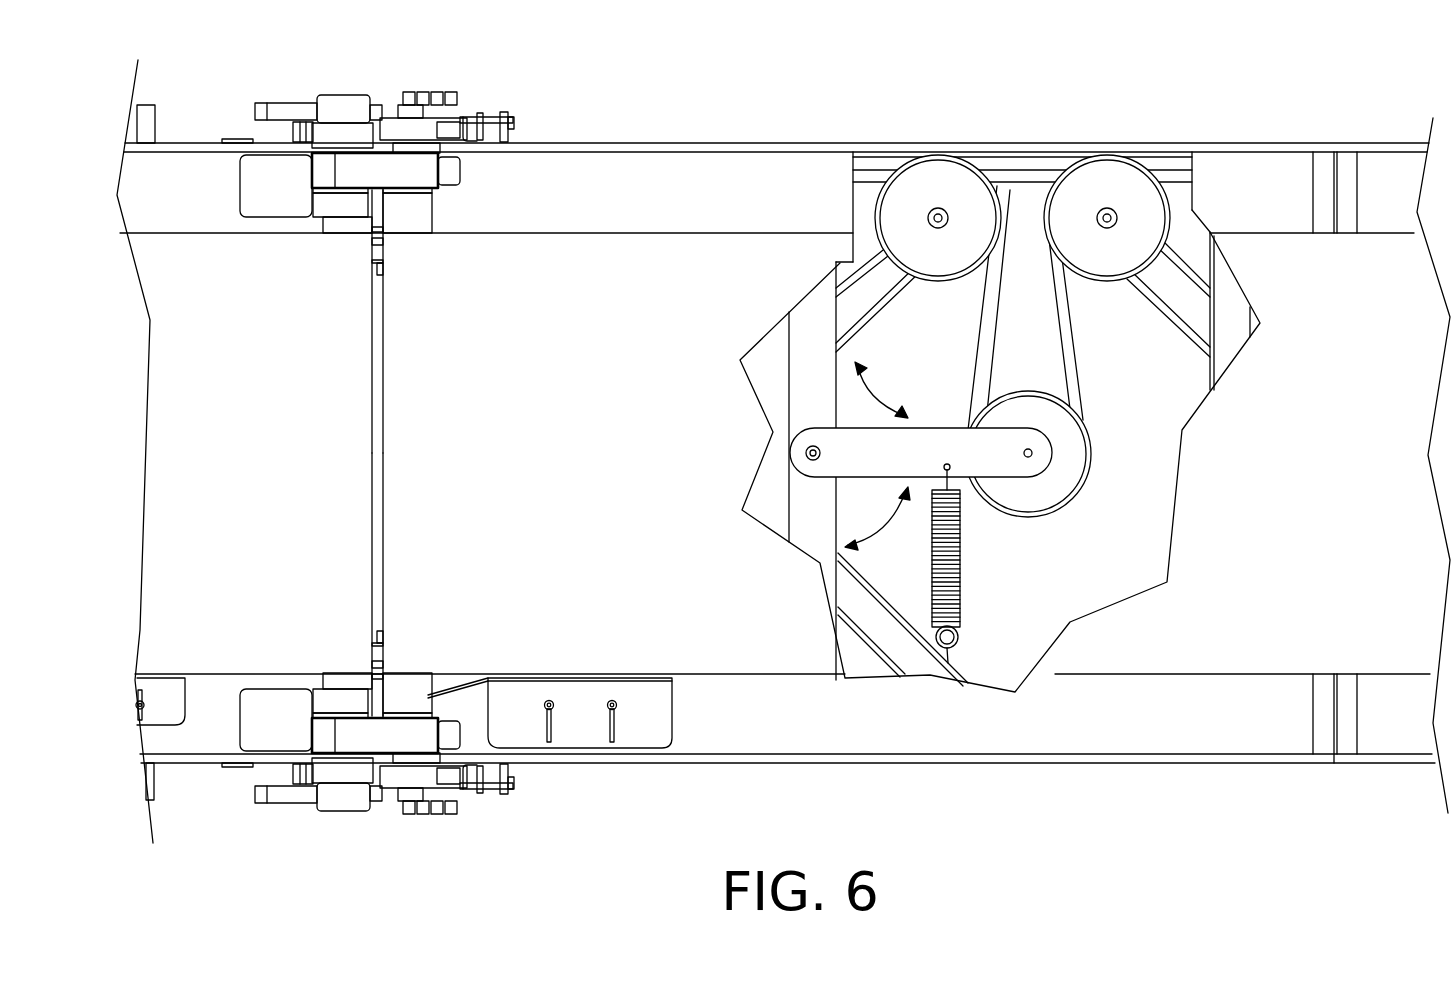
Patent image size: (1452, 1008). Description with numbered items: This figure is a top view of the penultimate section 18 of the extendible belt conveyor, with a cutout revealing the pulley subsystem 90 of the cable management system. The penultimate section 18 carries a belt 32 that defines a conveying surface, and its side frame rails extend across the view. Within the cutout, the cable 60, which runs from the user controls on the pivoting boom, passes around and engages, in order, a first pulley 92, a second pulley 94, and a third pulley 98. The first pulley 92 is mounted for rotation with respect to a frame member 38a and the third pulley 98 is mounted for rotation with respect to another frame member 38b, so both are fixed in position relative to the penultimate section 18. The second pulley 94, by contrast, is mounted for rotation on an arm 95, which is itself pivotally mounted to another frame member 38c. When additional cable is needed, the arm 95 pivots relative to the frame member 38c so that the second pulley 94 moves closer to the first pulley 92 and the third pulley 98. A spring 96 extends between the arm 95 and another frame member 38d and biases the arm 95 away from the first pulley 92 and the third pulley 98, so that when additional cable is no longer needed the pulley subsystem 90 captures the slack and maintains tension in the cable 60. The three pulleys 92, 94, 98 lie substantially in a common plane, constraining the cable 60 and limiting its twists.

The penultimate section 18 is at (583, 141).
The belt 32 is at (600, 387).
The frame member 38a is at (848, 264).
The frame member 38b is at (1188, 266).
The frame member 38c is at (788, 352).
The frame member 38d is at (863, 650).
The cable 60 is at (1080, 357).
The pulley subsystem 90 is at (1021, 114).
The first pulley 92 is at (943, 176).
The second pulley 94 is at (1033, 498).
The arm 95 is at (922, 428).
The spring 96 is at (962, 563).
The third pulley 98 is at (1090, 172).